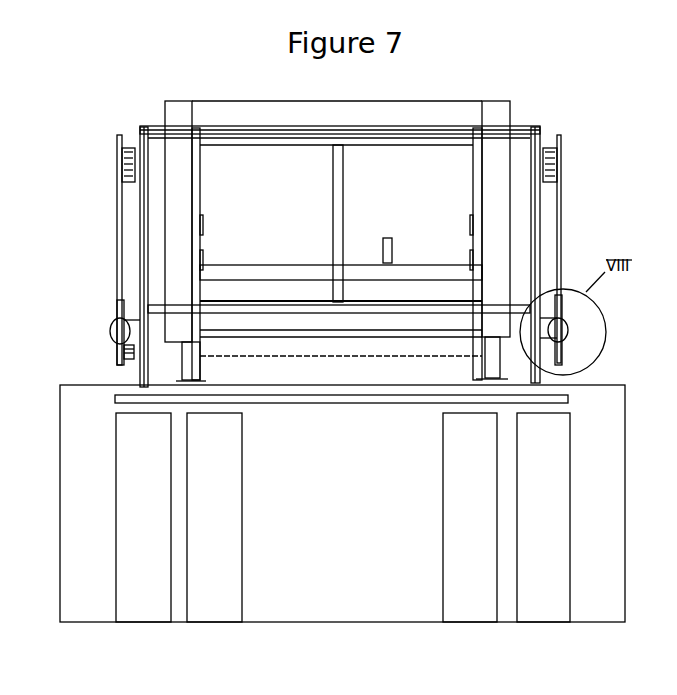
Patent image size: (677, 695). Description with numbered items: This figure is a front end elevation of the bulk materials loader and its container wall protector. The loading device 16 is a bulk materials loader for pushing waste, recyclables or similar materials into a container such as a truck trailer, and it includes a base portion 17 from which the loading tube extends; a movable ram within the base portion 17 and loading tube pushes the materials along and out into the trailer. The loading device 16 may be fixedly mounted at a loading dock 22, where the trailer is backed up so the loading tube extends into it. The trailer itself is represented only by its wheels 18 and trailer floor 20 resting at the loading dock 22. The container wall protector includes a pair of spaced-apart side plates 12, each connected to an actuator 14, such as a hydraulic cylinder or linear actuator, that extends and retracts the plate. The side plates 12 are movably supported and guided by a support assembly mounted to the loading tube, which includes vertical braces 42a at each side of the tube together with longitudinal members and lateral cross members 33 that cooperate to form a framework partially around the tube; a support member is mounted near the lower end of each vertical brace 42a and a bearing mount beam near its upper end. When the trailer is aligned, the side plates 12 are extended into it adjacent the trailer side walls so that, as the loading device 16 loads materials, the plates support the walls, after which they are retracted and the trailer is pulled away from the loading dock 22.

The side plate 12 is at (117, 240).
The actuator 14 is at (110, 333).
The loading device 16 is at (470, 84).
The base portion 17 is at (236, 89).
The wheels 18 is at (150, 603).
The trailer floor 20 is at (400, 397).
The loading dock 22 is at (342, 537).
The lateral cross member 33 is at (378, 126).
The vertical brace 42a is at (140, 130).